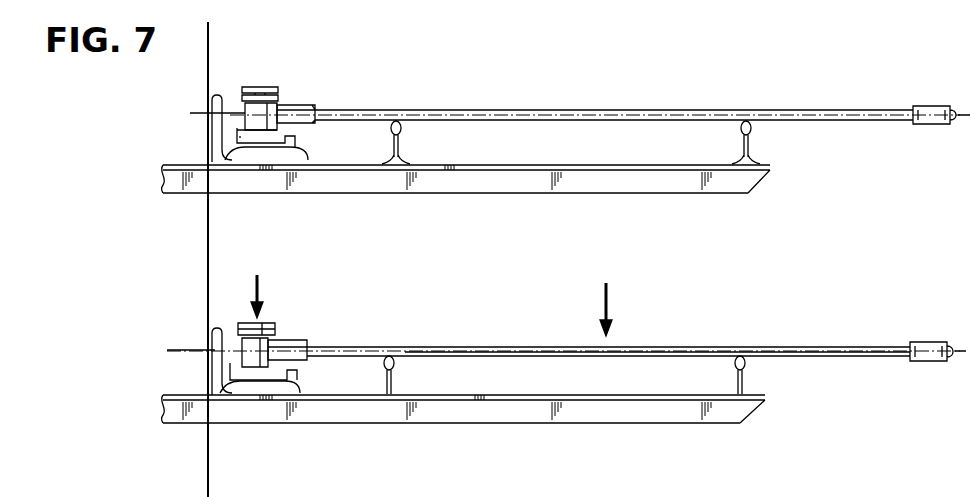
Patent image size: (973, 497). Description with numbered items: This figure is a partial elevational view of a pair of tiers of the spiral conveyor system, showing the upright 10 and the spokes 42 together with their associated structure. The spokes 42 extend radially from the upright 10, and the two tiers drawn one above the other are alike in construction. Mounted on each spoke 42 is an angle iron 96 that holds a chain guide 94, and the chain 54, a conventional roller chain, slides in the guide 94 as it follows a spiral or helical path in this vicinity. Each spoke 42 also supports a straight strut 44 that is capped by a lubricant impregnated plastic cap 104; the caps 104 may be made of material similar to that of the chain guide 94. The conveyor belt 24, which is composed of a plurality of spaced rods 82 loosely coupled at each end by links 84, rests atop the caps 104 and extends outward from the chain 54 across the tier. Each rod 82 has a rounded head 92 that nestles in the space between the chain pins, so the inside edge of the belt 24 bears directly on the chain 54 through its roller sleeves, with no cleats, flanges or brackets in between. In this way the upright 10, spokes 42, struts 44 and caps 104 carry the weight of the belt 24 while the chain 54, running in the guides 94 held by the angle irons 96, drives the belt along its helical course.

The upright 10 is at (210, 485).
The conveyor belt 24 is at (598, 110).
The spoke 42 is at (690, 182).
The straight strut 44 is at (392, 136).
The chain 54 is at (272, 80).
The rod 82 is at (478, 348).
The link 84 is at (295, 340).
The rounded head 92 is at (252, 353).
The chain guide 94 is at (232, 118).
The angle iron 96 is at (210, 104).
The lubricant impregnated plastic cap 104 is at (402, 128).